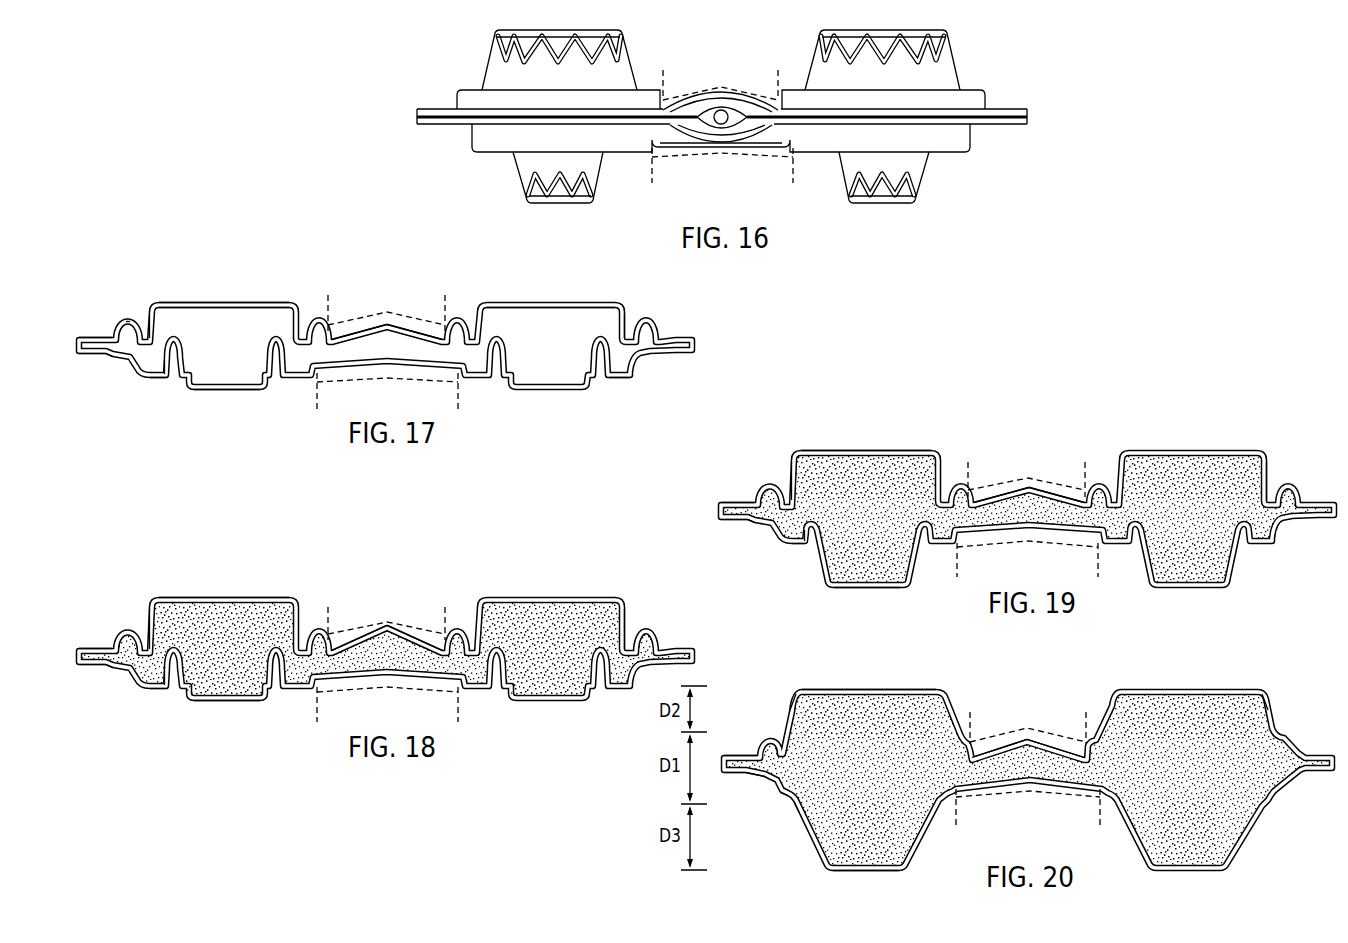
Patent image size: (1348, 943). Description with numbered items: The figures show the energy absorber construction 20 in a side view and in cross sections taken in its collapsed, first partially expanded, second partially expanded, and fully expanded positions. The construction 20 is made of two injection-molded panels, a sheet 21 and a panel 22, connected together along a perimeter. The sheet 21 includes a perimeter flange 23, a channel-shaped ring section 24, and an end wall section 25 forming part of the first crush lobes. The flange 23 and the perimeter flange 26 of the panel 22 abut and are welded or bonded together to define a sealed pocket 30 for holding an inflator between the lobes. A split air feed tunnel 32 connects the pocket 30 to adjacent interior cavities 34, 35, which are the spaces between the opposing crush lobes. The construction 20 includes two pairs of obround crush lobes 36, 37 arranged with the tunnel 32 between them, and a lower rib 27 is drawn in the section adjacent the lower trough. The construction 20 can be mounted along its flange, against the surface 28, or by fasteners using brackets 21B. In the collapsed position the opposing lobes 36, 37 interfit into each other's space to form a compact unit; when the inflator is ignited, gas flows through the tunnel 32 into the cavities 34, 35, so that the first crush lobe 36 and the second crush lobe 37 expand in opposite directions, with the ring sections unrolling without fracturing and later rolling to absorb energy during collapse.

In FIG. 16, the energy absorber construction 20 is at (452, 60).
In FIG. 17, the energy absorber construction 20 is at (184, 232).
In FIG. 19, the energy absorber construction 20 is at (977, 401).
In FIG. 20, the energy absorber construction 20 is at (983, 675).
In FIG. 17, the sheet 21 is at (92, 322).
In FIG. 18, the sheet 21 is at (92, 633).
In FIG. 19, the sheet 21 is at (735, 488).
In FIG. 20, the sheet 21 is at (735, 743).
In FIG. 16, the brackets 21B is at (780, 100).
In FIG. 17, the brackets 21B is at (443, 313).
In FIG. 18, the brackets 21B is at (443, 620).
In FIG. 19, the brackets 21B is at (1083, 478).
In FIG. 20, the brackets 21B is at (1086, 728).
In FIG. 17, the panel 22 is at (102, 372).
In FIG. 18, the panel 22 is at (102, 683).
In FIG. 19, the panel 22 is at (745, 541).
In FIG. 20, the panel 22 is at (746, 795).
In FIG. 17, the perimeter flange 23 is at (83, 337).
In FIG. 18, the perimeter flange 23 is at (83, 648).
In FIG. 19, the perimeter flange 23 is at (727, 502).
In FIG. 20, the perimeter flange 23 is at (729, 757).
In FIG. 17, the channel-shaped ring section 24 is at (122, 320).
In FIG. 17, the end wall section 25 is at (173, 302).
In FIG. 18, the end wall section 25 is at (173, 597).
In FIG. 19, the end wall section 25 is at (815, 450).
In FIG. 20, the end wall section 25 is at (818, 688).
In FIG. 17, the perimeter flange 26 is at (92, 353).
In FIG. 18, the perimeter flange 26 is at (92, 664).
In FIG. 19, the perimeter flange 26 is at (733, 520).
In FIG. 20, the perimeter flange 26 is at (735, 776).
In FIG. 17, the lower rib 27 is at (157, 380).
In FIG. 18, the lower rib 27 is at (157, 690).
In FIG. 19, the lower rib 27 is at (800, 555).
In FIG. 20, the lower rib 27 is at (793, 810).
In FIG. 17, the surface 28 is at (220, 390).
In FIG. 18, the surface 28 is at (220, 702).
In FIG. 19, the surface 28 is at (862, 590).
In FIG. 20, the surface 28 is at (862, 872).
In FIG. 16, the sealed pocket 30 is at (727, 108).
In FIG. 17, the split air feed tunnel 32 is at (400, 348).
In FIG. 18, the split air feed tunnel 32 is at (400, 645).
In FIG. 19, the split air feed tunnel 32 is at (1040, 497).
In FIG. 20, the split air feed tunnel 32 is at (1040, 735).
In FIG. 17, the interior cavity 34 is at (223, 330).
In FIG. 18, the interior cavity 34 is at (223, 620).
In FIG. 19, the interior cavity 34 is at (866, 475).
In FIG. 20, the interior cavity 34 is at (866, 710).
In FIG. 17, the interior cavity 35 is at (547, 325).
In FIG. 18, the interior cavity 35 is at (547, 615).
In FIG. 19, the interior cavity 35 is at (1186, 480).
In FIG. 20, the interior cavity 35 is at (1186, 710).
In FIG. 16, the first crush lobe 36 is at (497, 33).
In FIG. 17, the first crush lobe 36 is at (149, 306).
In FIG. 18, the first crush lobe 36 is at (149, 601).
In FIG. 19, the first crush lobe 36 is at (791, 455).
In FIG. 20, the first crush lobe 36 is at (791, 692).
In FIG. 16, the second crush lobe 37 is at (527, 173).
In FIG. 17, the second crush lobe 37 is at (138, 373).
In FIG. 18, the second crush lobe 37 is at (138, 685).
In FIG. 19, the second crush lobe 37 is at (783, 548).
In FIG. 20, the second crush lobe 37 is at (778, 795).